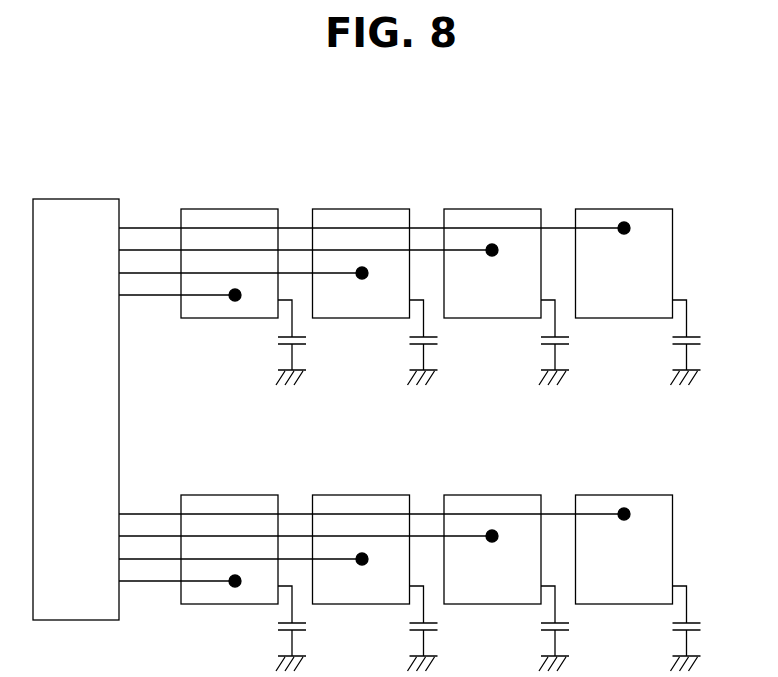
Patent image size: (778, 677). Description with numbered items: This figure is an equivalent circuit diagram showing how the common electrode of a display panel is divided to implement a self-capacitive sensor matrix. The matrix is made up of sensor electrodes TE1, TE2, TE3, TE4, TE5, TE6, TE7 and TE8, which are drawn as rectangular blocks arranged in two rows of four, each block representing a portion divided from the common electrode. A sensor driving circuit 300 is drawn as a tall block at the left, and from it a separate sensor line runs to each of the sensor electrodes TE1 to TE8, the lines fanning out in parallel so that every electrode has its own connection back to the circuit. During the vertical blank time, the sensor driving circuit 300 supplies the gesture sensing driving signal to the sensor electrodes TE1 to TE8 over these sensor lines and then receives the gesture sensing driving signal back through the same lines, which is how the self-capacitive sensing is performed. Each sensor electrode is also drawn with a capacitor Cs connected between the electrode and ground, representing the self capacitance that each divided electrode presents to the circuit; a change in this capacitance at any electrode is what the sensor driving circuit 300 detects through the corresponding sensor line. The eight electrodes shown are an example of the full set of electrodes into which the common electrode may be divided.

The sensor driving circuit 300 is at (56, 420).
The sensor electrode TE1 is at (229, 208).
The sensor electrode TE2 is at (360, 208).
The sensor electrode TE3 is at (492, 208).
The sensor electrode TE4 is at (624, 208).
The sensor electrode TE5 is at (229, 494).
The sensor electrode TE6 is at (360, 494).
The sensor electrode TE7 is at (492, 494).
The sensor electrode TE8 is at (624, 494).
The self capacitance Cs is at (502, 485).